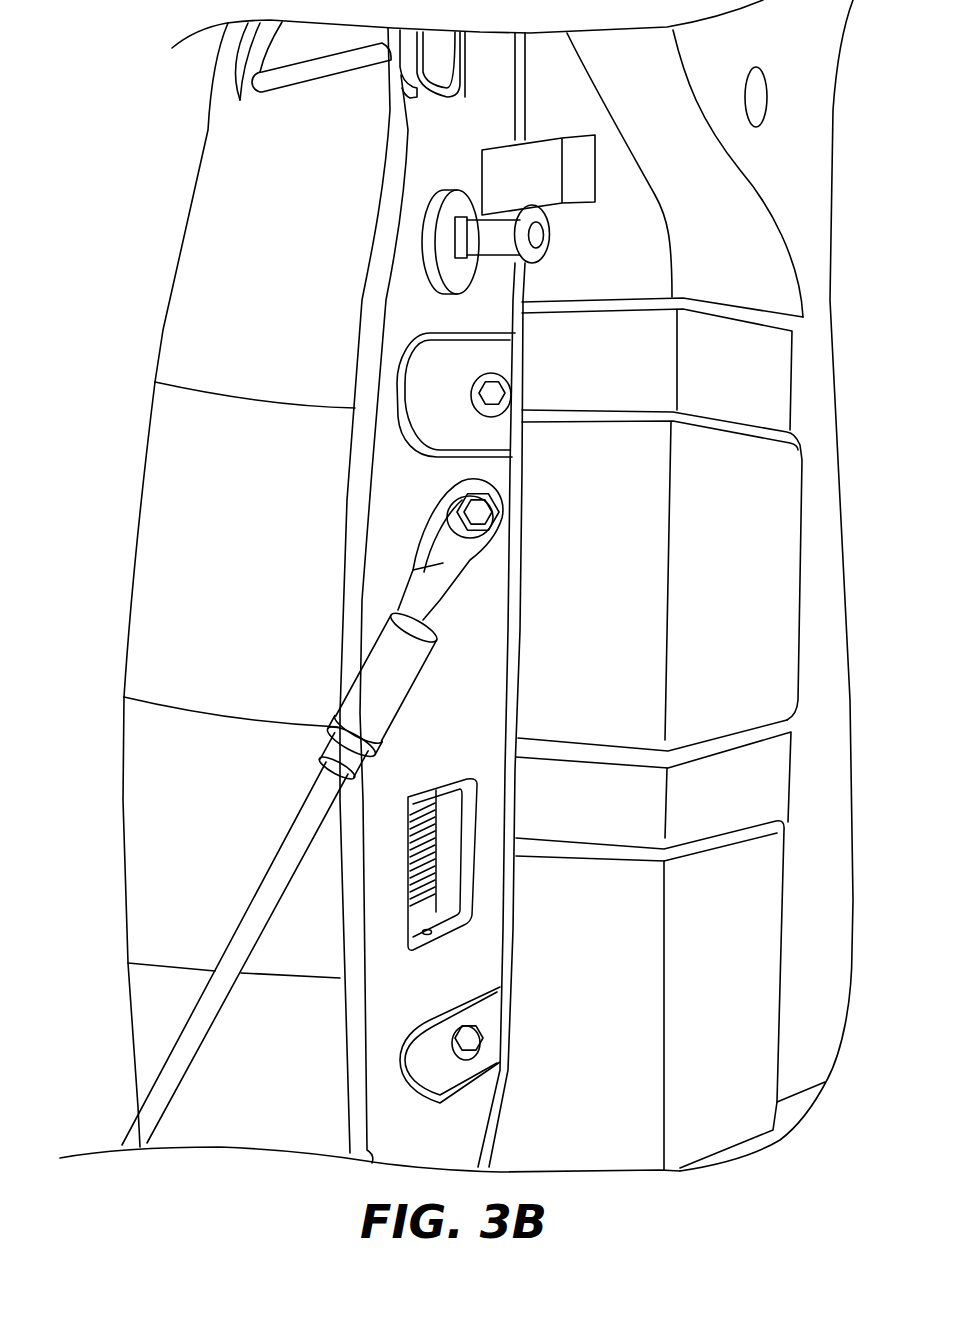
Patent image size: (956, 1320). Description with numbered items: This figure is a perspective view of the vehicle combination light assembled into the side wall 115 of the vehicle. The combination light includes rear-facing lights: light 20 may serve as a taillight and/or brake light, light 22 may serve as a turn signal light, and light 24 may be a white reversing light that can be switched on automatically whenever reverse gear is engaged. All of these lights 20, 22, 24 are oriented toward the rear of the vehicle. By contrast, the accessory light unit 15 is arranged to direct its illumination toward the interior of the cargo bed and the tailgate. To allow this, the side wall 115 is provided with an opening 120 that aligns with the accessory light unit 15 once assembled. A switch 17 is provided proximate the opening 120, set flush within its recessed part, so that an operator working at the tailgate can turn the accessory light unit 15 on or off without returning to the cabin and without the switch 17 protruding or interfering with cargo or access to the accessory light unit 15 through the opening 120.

The light 20 is at (158, 234).
The light 22 is at (120, 522).
The light 24 is at (113, 1012).
The accessory light unit 15 is at (380, 798).
The opening 120 is at (437, 777).
The switch 17 is at (430, 930).
The side wall 115 is at (470, 986).